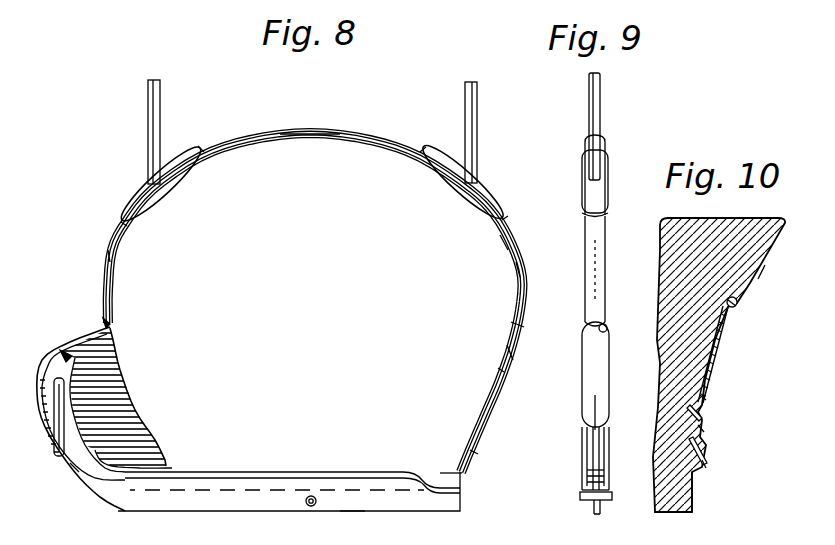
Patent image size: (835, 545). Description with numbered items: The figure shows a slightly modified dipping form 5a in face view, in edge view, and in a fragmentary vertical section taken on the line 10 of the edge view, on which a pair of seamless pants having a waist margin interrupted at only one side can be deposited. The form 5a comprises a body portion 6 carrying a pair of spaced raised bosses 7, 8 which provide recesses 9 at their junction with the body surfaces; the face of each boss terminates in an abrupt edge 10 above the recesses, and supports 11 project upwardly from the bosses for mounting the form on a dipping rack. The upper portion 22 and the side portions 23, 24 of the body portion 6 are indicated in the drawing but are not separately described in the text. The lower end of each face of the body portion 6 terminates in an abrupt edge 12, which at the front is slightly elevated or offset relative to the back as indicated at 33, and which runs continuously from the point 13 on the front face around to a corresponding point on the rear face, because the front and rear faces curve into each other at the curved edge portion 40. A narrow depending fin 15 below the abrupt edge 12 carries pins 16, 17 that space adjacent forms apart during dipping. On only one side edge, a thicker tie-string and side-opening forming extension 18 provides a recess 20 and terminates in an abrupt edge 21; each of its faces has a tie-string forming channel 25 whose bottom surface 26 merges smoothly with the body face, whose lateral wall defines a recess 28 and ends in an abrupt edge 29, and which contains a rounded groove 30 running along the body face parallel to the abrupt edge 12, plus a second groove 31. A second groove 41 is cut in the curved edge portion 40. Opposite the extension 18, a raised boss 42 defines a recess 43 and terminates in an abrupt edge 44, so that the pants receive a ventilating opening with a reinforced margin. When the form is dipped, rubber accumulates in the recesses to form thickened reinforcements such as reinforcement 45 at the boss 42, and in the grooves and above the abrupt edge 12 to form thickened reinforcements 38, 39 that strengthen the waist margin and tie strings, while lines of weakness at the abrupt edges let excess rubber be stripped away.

In FIG. 8, the modified form 5a is at (367, 137).
In FIG. 8, the body portion 6 is at (505, 247).
In FIG. 9, the body portion 6 is at (602, 244).
In FIG. 10, the body portion 6 is at (740, 217).
In FIG. 8, the raised boss 7 is at (177, 150).
In FIG. 8, the raised boss 8 is at (438, 158).
In FIG. 9, the raised boss 8 is at (605, 183).
In FIG. 8, the recess 9 is at (204, 143).
In FIG. 8, the abrupt edge 10 is at (199, 143).
In FIG. 9, the abrupt edge 10 is at (547, 387).
In FIG. 8, the support 11 is at (157, 115).
In FIG. 9, the support 11 is at (597, 97).
In FIG. 8, the abrupt edge 12 is at (378, 482).
In FIG. 10, the abrupt edge 12 is at (697, 473).
In FIG. 8, the point 13 is at (78, 468).
In FIG. 8, the depending fin 15 is at (350, 506).
In FIG. 9, the depending fin 15 is at (603, 513).
In FIG. 10, the depending fin 15 is at (695, 508).
In FIG. 8, the pin 16 is at (311, 506).
In FIG. 9, the pin 16 is at (583, 498).
In FIG. 9, the pin 17 is at (607, 498).
In FIG. 8, the tie-string and side-opening forming extension 18 is at (53, 348).
In FIG. 8, the recess 20 is at (103, 325).
In FIG. 8, the abrupt edge 21 is at (138, 411).
In FIG. 8, the top band 22 is at (288, 132).
In FIG. 9, the top band 22 is at (605, 136).
In FIG. 8, the left rim section 23 is at (107, 258).
In FIG. 8, the right rim section 24 is at (527, 270).
In FIG. 9, the right rim section 24 is at (600, 271).
In FIG. 8, the tie-string forming channel 25 is at (44, 372).
In FIG. 8, the bottom surface 26 is at (96, 481).
In FIG. 8, the recess 28 is at (82, 407).
In FIG. 8, the abrupt edge 29 is at (70, 372).
In FIG. 8, the groove 30 is at (347, 472).
In FIG. 9, the groove 30 is at (603, 484).
In FIG. 10, the groove 30 is at (703, 434).
In FIG. 8, the second groove 31 is at (170, 468).
In FIG. 8, the offset 33 is at (238, 480).
In FIG. 10, the thickened reinforcement 38 is at (708, 464).
In FIG. 10, the thickened reinforcement 39 is at (703, 412).
In FIG. 8, the curved edge portion 40 is at (467, 454).
In FIG. 9, the curved edge portion 40 is at (600, 448).
In FIG. 8, the second groove 41 is at (462, 473).
In FIG. 9, the second groove 41 is at (600, 472).
In FIG. 10, the second groove 41 is at (707, 398).
In FIG. 8, the raised boss 42 is at (522, 353).
In FIG. 9, the raised boss 42 is at (592, 356).
In FIG. 10, the raised boss 42 is at (764, 265).
In FIG. 8, the recess 43 is at (523, 325).
In FIG. 9, the recess 43 is at (605, 322).
In FIG. 10, the recess 43 is at (720, 333).
In FIG. 8, the abrupt edge 44 is at (498, 368).
In FIG. 9, the abrupt edge 44 is at (612, 332).
In FIG. 10, the abrupt edge 44 is at (737, 303).
In FIG. 10, the thickened reinforcement 45 is at (735, 307).